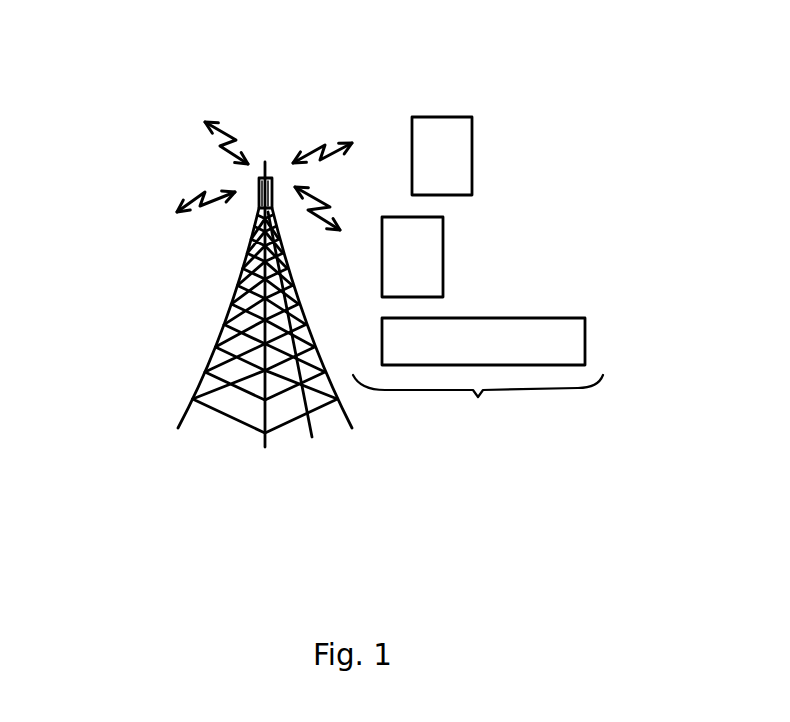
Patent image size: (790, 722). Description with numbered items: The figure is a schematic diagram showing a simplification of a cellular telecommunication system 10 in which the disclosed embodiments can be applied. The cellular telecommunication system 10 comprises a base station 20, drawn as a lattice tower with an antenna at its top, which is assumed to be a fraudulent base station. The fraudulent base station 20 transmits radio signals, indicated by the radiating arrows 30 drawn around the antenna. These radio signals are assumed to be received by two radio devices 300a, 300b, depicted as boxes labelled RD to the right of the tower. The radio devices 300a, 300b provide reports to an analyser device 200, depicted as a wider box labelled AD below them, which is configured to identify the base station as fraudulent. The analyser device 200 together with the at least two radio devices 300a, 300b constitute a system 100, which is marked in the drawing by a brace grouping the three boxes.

The cellular telecommunication system 10 is at (140, 55).
The base station 20 is at (263, 167).
The radiating arrows 30 is at (199, 197).
The system 100 is at (478, 414).
The analyser device 200 is at (585, 338).
The radio device 300a is at (463, 175).
The radio device 300b is at (435, 275).